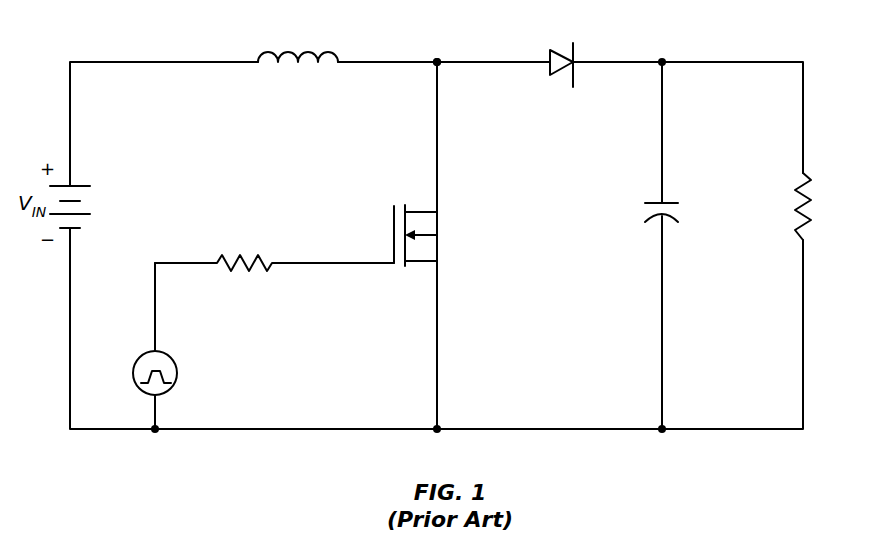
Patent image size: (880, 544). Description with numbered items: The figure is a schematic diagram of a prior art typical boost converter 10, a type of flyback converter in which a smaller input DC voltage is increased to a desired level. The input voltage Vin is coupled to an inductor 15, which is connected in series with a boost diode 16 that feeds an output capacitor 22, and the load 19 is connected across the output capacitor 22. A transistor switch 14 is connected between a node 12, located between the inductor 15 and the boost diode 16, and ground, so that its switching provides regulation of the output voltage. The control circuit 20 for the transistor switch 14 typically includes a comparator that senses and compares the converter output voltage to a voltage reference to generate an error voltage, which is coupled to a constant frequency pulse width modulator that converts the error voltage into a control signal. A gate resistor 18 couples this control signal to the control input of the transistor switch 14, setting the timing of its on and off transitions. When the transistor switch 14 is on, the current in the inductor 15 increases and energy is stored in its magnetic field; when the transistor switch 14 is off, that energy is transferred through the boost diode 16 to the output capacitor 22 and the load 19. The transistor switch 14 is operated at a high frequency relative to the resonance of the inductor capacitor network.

The boost converter 10 is at (740, 46).
The node 12 is at (437, 58).
The transistor switch 14 is at (438, 248).
The inductor 15 is at (303, 48).
The boost diode 16 is at (566, 58).
The gate resistor 18 is at (258, 256).
The load 19 is at (814, 193).
The control circuit 20 is at (177, 373).
The output capacitor 22 is at (656, 200).